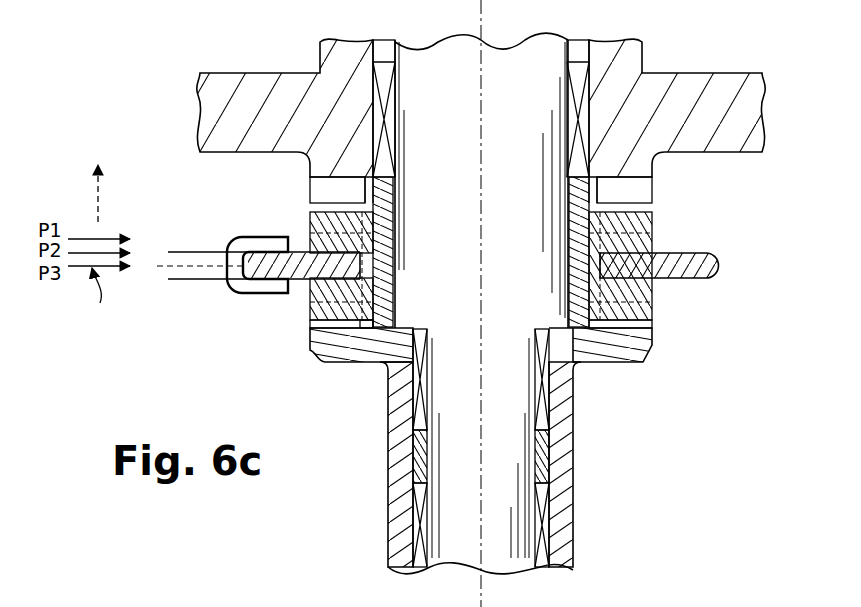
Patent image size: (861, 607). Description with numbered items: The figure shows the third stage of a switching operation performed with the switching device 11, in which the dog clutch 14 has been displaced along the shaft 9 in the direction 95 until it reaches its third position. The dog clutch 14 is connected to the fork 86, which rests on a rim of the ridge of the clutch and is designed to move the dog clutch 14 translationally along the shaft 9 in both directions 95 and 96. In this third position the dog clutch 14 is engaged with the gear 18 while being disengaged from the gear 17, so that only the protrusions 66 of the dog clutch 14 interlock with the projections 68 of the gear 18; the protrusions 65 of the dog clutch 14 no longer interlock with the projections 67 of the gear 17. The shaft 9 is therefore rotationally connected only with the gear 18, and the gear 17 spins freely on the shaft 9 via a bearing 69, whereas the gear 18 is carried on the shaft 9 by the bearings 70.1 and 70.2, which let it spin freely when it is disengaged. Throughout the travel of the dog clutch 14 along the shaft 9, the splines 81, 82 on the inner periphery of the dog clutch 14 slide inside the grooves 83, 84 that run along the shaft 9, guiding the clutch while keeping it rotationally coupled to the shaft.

The shaft 9 is at (510, 193).
The switching device 11 is at (196, 185).
The dog clutch 14 is at (308, 297).
The gear 17 is at (227, 107).
The gear 18 is at (397, 463).
The protrusions 65 is at (308, 218).
The protrusions 66 is at (310, 323).
The projections 67 is at (338, 188).
The projections 68 is at (352, 332).
The bearing 69 is at (387, 120).
The bearing 70.1 is at (400, 407).
The bearing 70.2 is at (405, 518).
The spline 81 is at (367, 242).
The spline 82 is at (597, 260).
The groove 83 is at (368, 323).
The groove 84 is at (593, 190).
The fork 86 is at (263, 245).
The direction 95 is at (94, 294).
The direction 96 is at (98, 180).